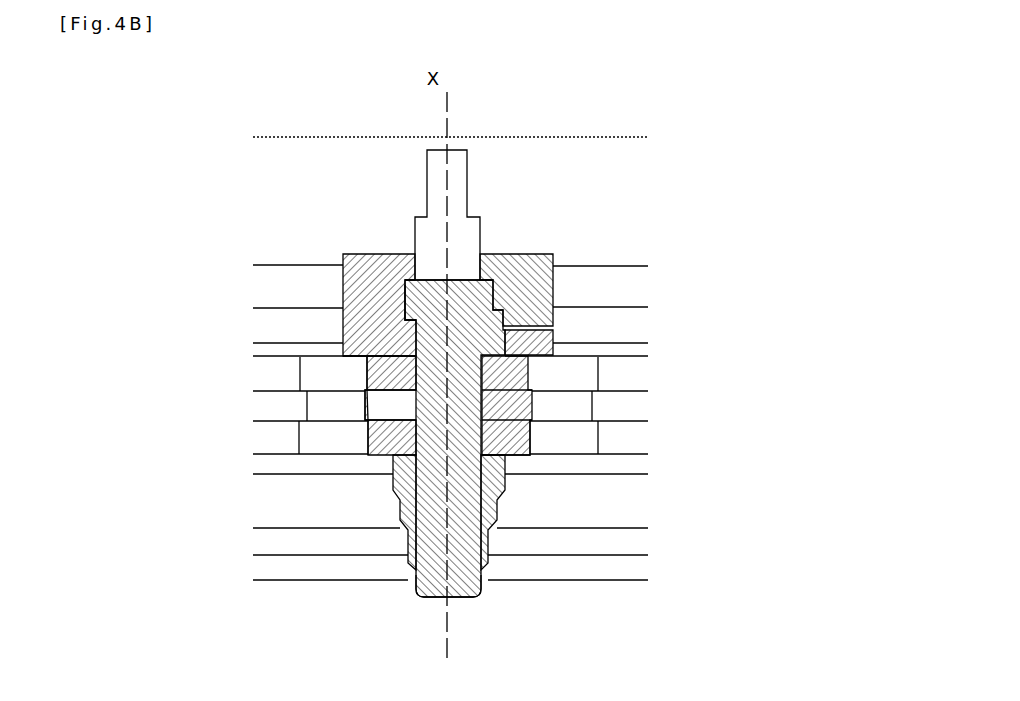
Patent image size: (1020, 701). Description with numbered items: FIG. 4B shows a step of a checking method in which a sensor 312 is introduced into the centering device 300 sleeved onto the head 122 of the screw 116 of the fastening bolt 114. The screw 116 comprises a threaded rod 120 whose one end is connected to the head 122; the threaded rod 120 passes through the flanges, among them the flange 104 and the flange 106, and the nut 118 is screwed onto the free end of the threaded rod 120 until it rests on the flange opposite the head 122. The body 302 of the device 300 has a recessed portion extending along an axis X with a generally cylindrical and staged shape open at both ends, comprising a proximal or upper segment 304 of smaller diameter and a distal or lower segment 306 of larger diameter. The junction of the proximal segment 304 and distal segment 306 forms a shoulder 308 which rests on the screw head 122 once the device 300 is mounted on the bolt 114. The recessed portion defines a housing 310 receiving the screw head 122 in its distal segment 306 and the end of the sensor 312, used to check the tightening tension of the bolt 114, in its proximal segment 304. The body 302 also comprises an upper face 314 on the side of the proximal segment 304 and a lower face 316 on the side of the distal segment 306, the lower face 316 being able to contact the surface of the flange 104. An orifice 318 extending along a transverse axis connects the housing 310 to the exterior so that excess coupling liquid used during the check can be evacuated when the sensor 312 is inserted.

The centering device 300 is at (555, 172).
The body 302 is at (526, 296).
The proximal segment 304 is at (553, 253).
The distal segment 306 is at (398, 352).
The shoulder 308 is at (402, 253).
The housing 310 is at (405, 325).
The sensor 312 is at (453, 238).
The upper face 314 is at (356, 253).
The lower face 316 is at (367, 360).
The orifice 318 is at (553, 333).
The flange 104 is at (608, 378).
The second panel 106 is at (627, 443).
The fastening bolt 114 is at (291, 534).
The screw 116 is at (531, 456).
The nut 118 is at (502, 507).
The threaded rod 120 is at (484, 578).
The head 122 is at (368, 363).